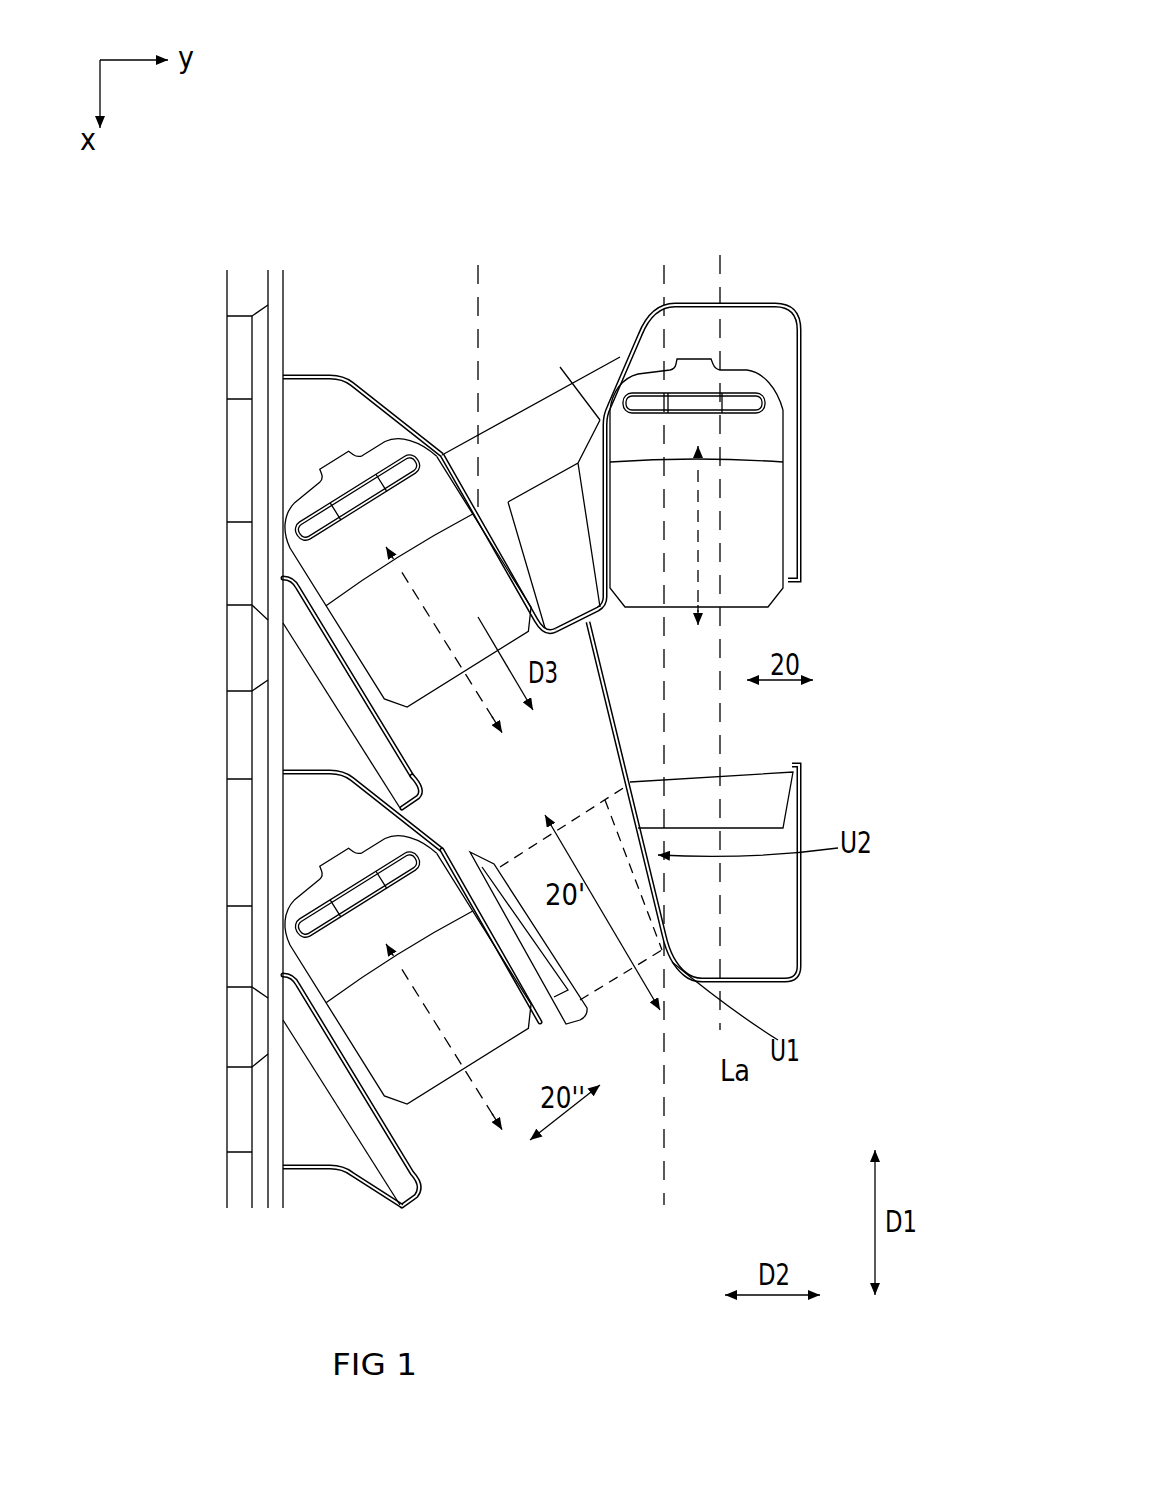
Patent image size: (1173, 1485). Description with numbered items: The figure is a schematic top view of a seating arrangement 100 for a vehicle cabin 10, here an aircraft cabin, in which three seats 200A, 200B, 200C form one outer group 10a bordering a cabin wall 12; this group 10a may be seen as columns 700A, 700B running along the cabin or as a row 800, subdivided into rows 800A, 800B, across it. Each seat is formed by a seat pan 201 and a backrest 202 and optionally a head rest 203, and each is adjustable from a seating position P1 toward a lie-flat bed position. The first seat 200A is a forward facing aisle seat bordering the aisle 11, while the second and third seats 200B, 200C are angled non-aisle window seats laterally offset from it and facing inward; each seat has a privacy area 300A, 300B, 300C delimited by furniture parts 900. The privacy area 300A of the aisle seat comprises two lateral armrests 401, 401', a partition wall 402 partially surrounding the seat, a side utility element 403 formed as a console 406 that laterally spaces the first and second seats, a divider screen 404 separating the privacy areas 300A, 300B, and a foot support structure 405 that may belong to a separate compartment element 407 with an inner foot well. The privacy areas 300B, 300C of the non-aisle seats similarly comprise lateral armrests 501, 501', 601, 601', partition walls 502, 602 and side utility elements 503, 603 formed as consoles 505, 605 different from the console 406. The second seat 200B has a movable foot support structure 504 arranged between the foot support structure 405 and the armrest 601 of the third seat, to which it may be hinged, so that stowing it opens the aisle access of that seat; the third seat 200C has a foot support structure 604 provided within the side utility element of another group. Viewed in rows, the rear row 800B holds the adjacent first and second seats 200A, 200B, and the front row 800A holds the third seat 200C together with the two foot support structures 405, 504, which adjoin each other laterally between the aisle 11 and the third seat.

The vehicle cabin 10 is at (861, 186).
The group 10a is at (583, 173).
The aisle 11 is at (865, 730).
The cabin wall 12 is at (218, 388).
The seating arrangement 100 is at (328, 130).
The first seat 200A is at (770, 375).
The second seat 200B is at (306, 467).
The third seat 200C is at (306, 817).
The seat pan 201 is at (773, 527).
The backrest 202 is at (770, 423).
The head rest 203 is at (698, 398).
The privacy area 300A is at (802, 614).
The privacy area 300B is at (337, 404).
The privacy area 300C is at (207, 940).
The lateral armrest 401 is at (851, 470).
The lateral armrest 401' is at (531, 393).
The partition wall 402 is at (755, 301).
The side utility element 403 is at (557, 505).
The divider screen 404 is at (626, 737).
The foot support structure 405 is at (808, 878).
The console 406 is at (602, 644).
The compartment element 407 is at (803, 1012).
The lateral armrest 501 is at (490, 497).
The lateral armrest 501' is at (223, 588).
The partition wall 502 is at (388, 396).
The side utility element 503 is at (298, 702).
The foot support structure 504 is at (672, 935).
The console 505 is at (368, 773).
The lateral armrest 601 is at (567, 986).
The lateral armrest 601' is at (377, 1165).
The partition wall 602 is at (285, 770).
The side utility element 603 is at (317, 1142).
The foot support structure 604 is at (612, 358).
The console 605 is at (290, 1133).
The column 700A is at (440, 178).
The column 700B is at (718, 171).
The row 800 is at (193, 632).
The row 800A is at (842, 935).
The row 800B is at (840, 455).
The furniture parts 900 is at (687, 283).
The seating position P1 is at (784, 372).